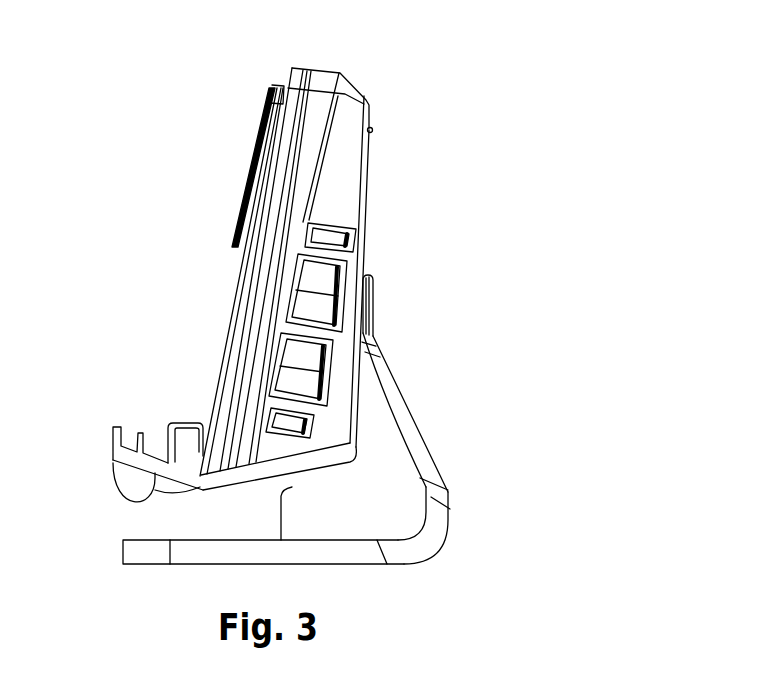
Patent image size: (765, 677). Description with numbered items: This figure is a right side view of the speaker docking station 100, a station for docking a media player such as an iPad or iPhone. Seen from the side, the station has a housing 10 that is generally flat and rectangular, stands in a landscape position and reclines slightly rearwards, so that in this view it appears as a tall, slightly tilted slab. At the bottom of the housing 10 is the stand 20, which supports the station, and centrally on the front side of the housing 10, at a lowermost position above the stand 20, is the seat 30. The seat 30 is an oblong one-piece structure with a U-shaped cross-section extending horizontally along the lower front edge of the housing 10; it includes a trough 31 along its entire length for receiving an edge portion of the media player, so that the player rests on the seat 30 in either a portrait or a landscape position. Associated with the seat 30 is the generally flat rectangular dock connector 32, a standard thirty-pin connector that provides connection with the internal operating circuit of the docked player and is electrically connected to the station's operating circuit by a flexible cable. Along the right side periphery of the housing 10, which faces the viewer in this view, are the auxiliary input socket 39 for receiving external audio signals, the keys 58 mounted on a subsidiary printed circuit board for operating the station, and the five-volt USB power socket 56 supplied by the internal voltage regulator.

The speaker docking station 100 is at (511, 81).
The housing 10 is at (363, 63).
The stand 20 is at (438, 533).
The seat 30 is at (112, 464).
The trough 31 is at (171, 445).
The dock connector 32 is at (140, 433).
The auxiliary input socket 39 is at (346, 241).
The USB power socket 56 is at (300, 432).
The keys 58 is at (318, 313).